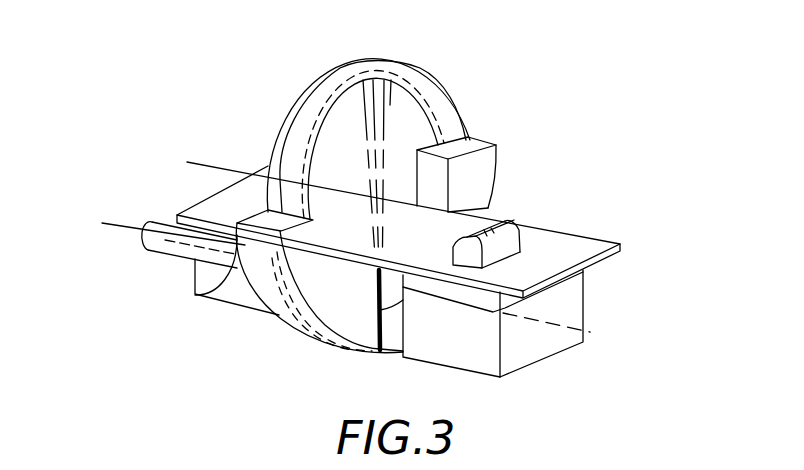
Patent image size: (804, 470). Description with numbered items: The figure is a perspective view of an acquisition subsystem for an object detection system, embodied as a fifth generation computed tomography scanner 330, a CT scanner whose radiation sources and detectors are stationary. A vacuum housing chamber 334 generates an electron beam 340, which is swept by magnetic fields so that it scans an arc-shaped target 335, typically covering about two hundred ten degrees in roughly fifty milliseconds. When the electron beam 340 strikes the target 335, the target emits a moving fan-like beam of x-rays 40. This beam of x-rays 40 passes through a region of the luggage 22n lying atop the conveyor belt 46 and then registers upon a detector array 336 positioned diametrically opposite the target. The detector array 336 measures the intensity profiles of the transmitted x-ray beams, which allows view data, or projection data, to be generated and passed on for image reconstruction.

The computed tomography scanner 330 is at (518, 112).
The detector array 336 is at (394, 105).
The arc-shaped target 335 is at (357, 340).
The electron beam 340 is at (193, 296).
The vacuum housing chamber 334 is at (173, 238).
The beam of x-rays 40 is at (492, 144).
The conveyor belt 46 is at (598, 242).
The luggage 22n is at (505, 243).